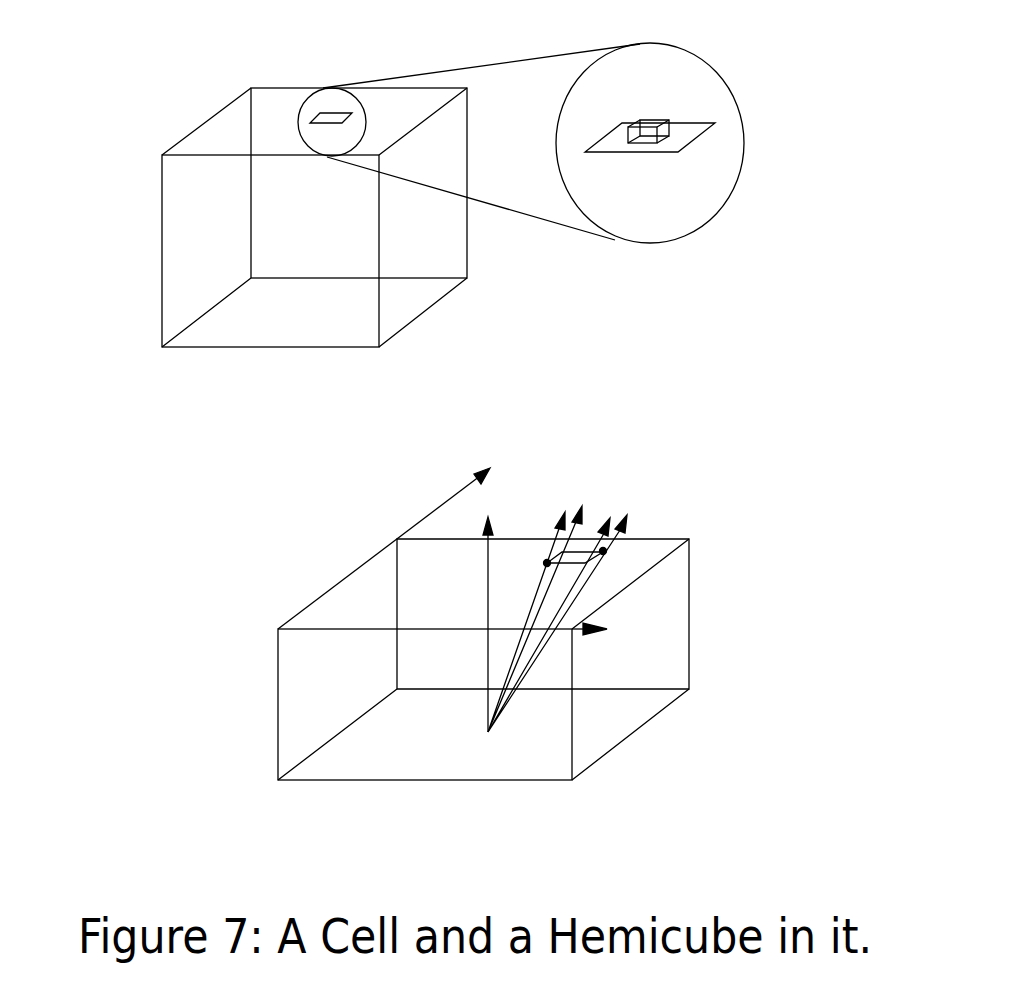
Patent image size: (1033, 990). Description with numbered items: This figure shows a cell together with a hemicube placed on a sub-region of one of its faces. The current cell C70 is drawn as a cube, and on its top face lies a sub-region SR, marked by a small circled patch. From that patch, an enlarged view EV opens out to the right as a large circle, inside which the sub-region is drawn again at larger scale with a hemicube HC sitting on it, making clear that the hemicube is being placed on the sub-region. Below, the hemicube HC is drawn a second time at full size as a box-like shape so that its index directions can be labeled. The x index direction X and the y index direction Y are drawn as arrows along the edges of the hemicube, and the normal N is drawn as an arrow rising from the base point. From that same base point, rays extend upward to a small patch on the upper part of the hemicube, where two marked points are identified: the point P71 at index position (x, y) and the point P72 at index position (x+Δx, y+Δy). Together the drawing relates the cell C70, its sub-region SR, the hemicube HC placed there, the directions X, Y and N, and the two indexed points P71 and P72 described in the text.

The current cell C70 is at (165, 265).
The sub-region SR is at (337, 110).
The enlarged view EV is at (670, 245).
The hemicube HC is at (651, 120).
The y index direction Y is at (443, 503).
The x index direction X is at (440, 630).
The normal N is at (485, 602).
The point (x, y) P71 is at (547, 563).
The point (x+Δx, y+Δy) P72 is at (603, 551).